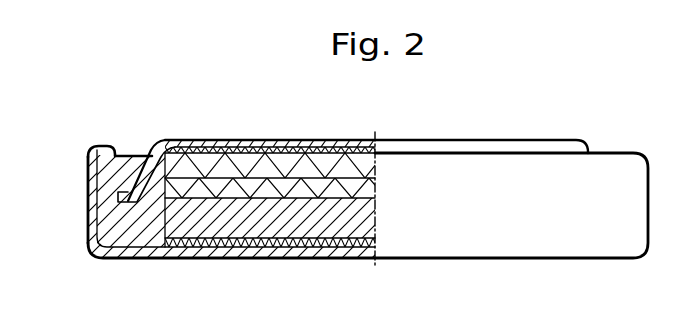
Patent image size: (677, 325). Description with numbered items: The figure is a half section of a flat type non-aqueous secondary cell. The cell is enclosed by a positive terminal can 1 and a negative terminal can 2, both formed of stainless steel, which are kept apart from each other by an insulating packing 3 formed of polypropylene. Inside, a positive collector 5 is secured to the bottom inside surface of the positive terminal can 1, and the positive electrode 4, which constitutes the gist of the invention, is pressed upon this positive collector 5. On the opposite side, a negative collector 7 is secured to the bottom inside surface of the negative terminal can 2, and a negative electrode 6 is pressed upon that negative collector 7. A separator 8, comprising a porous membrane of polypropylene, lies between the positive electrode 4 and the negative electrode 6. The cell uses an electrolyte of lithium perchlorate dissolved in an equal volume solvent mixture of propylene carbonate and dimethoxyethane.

The positive terminal can 1 is at (133, 257).
The negative terminal can 2 is at (248, 143).
The insulating packing 3 is at (133, 157).
The positive electrode 4 is at (259, 220).
The positive collector 5 is at (210, 231).
The negative electrode 6 is at (300, 170).
The negative collector 7 is at (331, 158).
The separator 8 is at (213, 188).